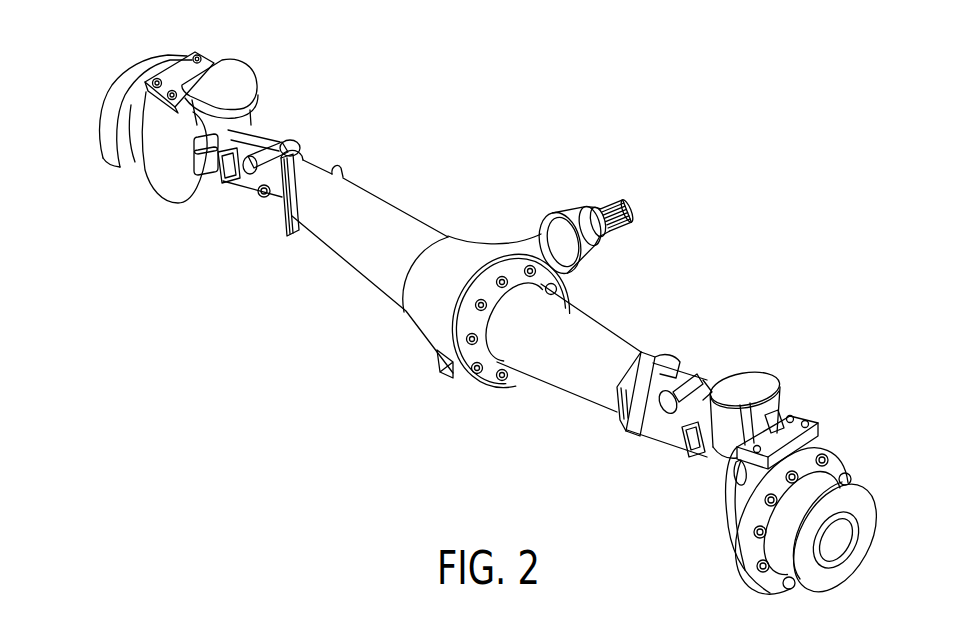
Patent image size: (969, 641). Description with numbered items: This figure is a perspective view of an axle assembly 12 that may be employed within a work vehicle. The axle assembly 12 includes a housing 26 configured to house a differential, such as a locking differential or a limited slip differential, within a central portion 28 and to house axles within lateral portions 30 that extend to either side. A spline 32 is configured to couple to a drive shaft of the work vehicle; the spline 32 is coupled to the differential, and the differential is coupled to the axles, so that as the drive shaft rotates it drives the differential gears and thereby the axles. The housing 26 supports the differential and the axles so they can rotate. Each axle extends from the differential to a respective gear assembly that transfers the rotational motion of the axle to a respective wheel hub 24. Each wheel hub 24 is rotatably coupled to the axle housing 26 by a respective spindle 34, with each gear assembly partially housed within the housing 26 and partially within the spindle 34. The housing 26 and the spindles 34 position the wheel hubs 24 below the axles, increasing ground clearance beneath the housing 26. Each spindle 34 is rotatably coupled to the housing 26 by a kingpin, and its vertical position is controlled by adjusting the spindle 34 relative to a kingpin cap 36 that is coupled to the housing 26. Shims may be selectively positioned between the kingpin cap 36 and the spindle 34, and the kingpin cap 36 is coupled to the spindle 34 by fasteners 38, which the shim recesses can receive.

The axle assembly 12 is at (84, 117).
The wheel hub 24 is at (131, 108).
The housing 26 is at (465, 257).
The central portion 28 is at (497, 393).
The lateral portions 30 is at (352, 282).
The spline 32 is at (603, 204).
The spindle 34 is at (143, 158).
The kingpin cap 36 is at (240, 92).
The fasteners 38 is at (172, 92).